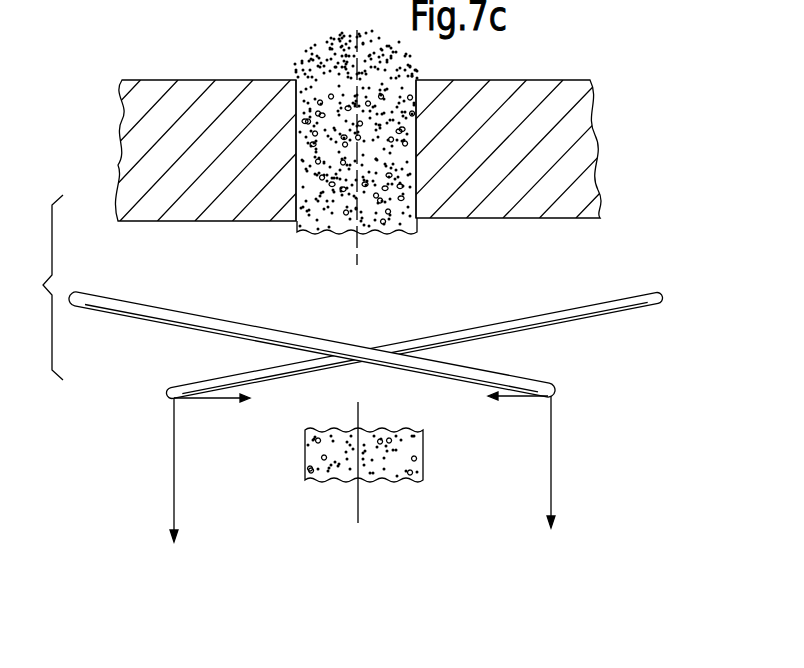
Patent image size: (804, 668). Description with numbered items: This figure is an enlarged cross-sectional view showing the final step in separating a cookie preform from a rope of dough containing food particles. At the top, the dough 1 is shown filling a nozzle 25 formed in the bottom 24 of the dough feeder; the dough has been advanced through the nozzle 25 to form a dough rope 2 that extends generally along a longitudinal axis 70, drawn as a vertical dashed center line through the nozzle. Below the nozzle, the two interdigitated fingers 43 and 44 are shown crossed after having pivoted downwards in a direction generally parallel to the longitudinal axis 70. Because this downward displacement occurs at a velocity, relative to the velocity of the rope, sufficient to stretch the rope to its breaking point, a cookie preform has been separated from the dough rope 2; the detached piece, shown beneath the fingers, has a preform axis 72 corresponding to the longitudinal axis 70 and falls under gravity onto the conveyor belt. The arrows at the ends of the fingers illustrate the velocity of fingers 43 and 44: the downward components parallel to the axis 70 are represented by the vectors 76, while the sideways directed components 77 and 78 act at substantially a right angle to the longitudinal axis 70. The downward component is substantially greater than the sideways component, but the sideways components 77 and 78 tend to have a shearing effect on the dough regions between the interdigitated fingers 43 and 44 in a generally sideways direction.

The dough 1 is at (309, 62).
The bottom of feeder 24 is at (567, 80).
The nozzle 25 is at (416, 158).
The longitudinal axis 70 is at (360, 234).
The finger 43 is at (172, 309).
The finger 44 is at (562, 312).
The sideways directed component 77 is at (216, 399).
The sideways directed component 78 is at (510, 398).
The vectors 76 is at (174, 454).
The dough rope 2 is at (305, 445).
The preform axis 72 is at (362, 493).